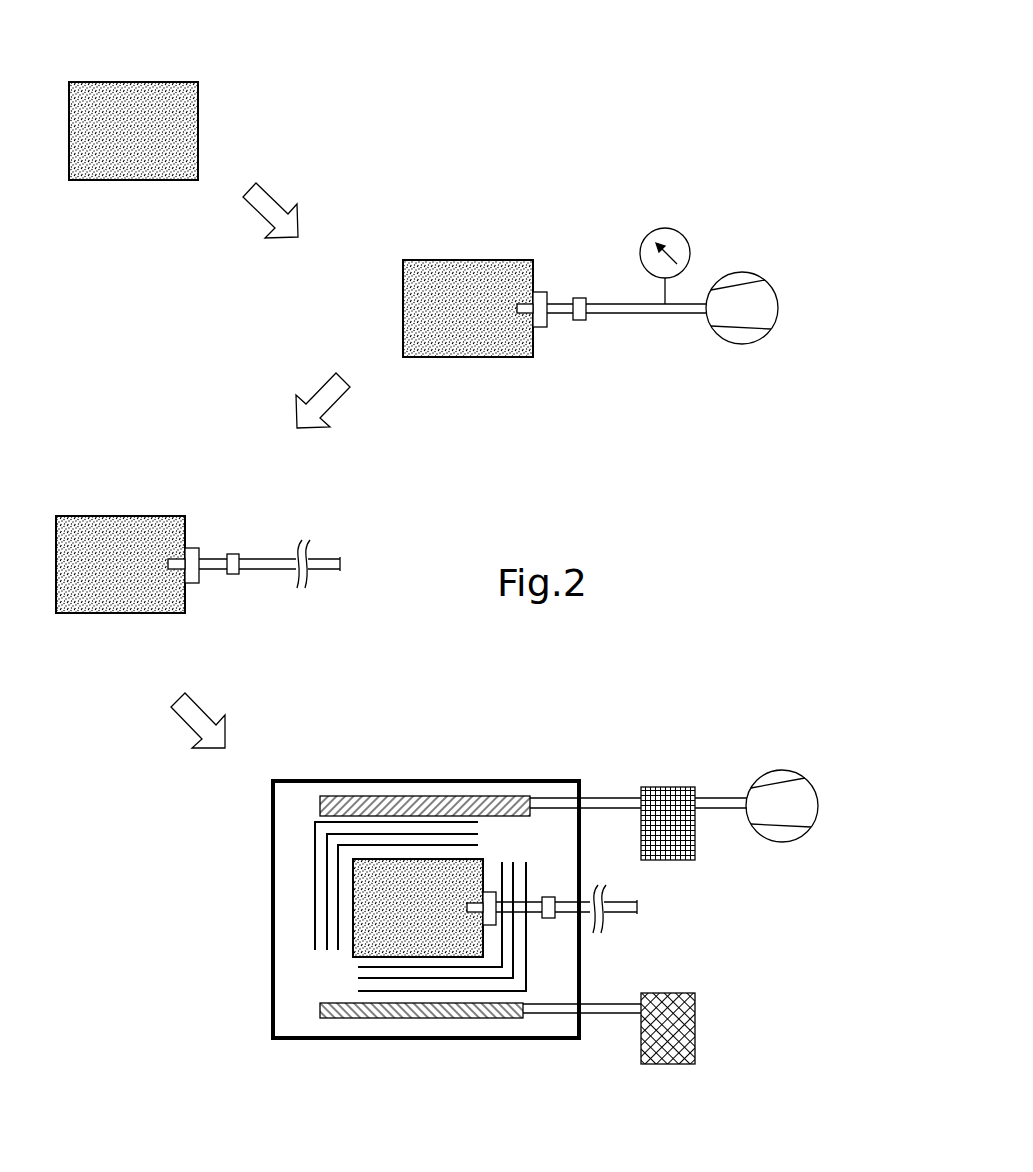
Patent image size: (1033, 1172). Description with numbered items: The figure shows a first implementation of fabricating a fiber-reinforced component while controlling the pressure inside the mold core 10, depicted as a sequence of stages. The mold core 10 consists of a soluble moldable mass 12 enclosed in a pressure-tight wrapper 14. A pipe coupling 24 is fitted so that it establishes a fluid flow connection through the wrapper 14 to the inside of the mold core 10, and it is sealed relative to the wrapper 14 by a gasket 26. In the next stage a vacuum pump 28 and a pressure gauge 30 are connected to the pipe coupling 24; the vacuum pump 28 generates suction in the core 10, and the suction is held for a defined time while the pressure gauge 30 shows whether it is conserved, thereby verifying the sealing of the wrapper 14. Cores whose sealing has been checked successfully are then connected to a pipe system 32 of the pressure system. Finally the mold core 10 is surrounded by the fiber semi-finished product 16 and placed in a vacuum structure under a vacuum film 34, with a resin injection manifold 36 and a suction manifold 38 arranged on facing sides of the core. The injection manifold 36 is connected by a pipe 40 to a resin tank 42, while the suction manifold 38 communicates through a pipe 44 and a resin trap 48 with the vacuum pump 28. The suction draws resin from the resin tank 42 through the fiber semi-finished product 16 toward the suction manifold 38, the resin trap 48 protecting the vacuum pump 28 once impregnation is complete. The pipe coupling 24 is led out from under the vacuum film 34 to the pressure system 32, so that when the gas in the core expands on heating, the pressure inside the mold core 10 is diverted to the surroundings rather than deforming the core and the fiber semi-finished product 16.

The mold core 10 is at (160, 70).
The soluble moldable mass 12 is at (187, 108).
The pressure-tight wrapper 14 is at (198, 155).
The fiber semi-finished product 16 is at (326, 910).
The pipe coupling 24 is at (560, 312).
The gasket 26 is at (540, 293).
The vacuum pump 28 is at (752, 268).
The pressure gauge 30 is at (668, 227).
The pipe system 32 is at (328, 543).
The vacuum film 34 is at (352, 778).
The resin injection manifold 36 is at (382, 1010).
The suction manifold 38 is at (418, 797).
The pipe 40 is at (622, 1008).
The resin tank 42 is at (687, 1038).
The pipe 44 is at (597, 800).
The resin trap 48 is at (677, 788).